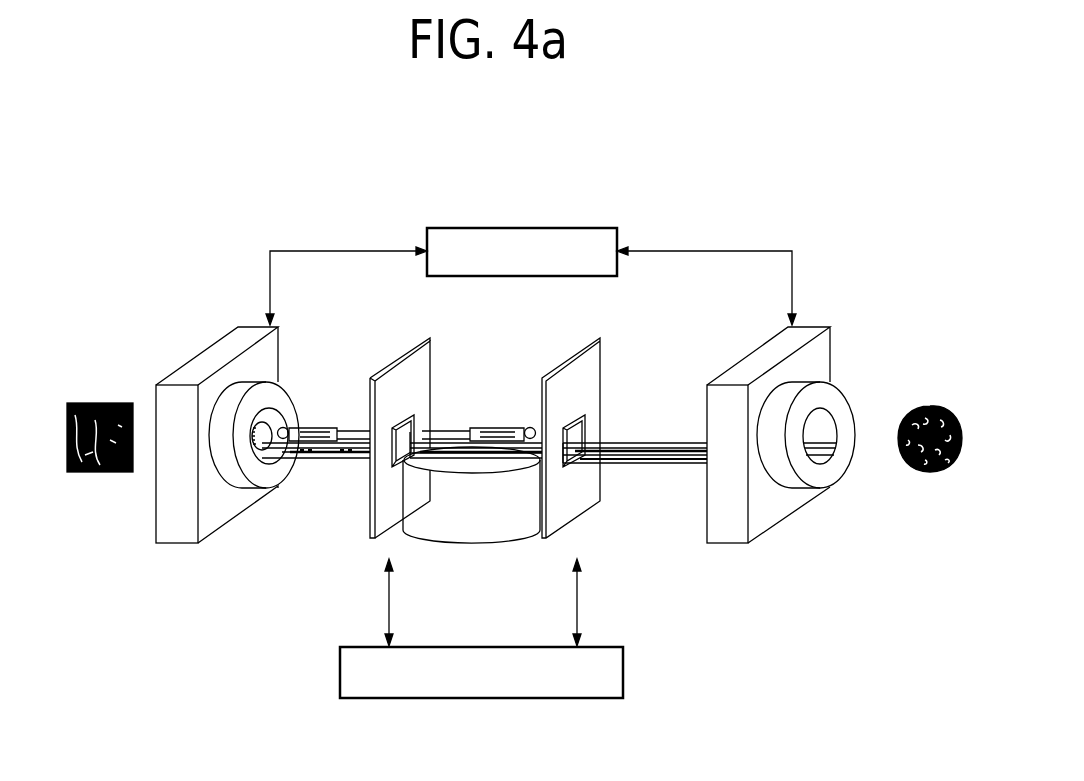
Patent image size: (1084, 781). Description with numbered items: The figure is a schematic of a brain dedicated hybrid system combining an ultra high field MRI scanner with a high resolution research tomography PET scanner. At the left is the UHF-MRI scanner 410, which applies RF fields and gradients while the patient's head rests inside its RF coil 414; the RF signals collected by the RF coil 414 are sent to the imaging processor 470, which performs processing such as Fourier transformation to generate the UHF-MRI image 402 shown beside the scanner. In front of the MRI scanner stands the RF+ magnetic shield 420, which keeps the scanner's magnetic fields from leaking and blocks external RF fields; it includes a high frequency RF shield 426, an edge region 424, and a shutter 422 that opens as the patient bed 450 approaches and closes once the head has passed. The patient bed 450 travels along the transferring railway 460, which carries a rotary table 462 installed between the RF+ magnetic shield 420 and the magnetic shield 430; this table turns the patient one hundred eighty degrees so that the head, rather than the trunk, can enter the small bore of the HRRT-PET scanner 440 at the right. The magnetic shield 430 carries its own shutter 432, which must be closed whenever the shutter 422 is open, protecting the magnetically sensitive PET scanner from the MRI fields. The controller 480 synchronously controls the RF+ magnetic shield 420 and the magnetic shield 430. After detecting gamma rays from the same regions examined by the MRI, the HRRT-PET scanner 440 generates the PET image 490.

The UHF-MRI image 402 is at (93, 472).
The UHF-MRI scanner 410 is at (227, 447).
The RF coil 414 is at (207, 362).
The RF+ magnetic shield 420 is at (411, 453).
The shutter 422 is at (420, 415).
The edge of first shielding plate 424 is at (402, 353).
The high frequency RF shield 426 is at (420, 375).
The magnetic shield 430 is at (607, 458).
The shutter 432 is at (586, 420).
The HRRT-PET scanner 440 is at (775, 505).
The patient bed 450 is at (421, 446).
The transferring railway 460 is at (650, 463).
The rotary table 462 is at (476, 520).
The imaging processor 470 is at (503, 228).
The controller 480 is at (477, 698).
The PET image 490 is at (931, 475).